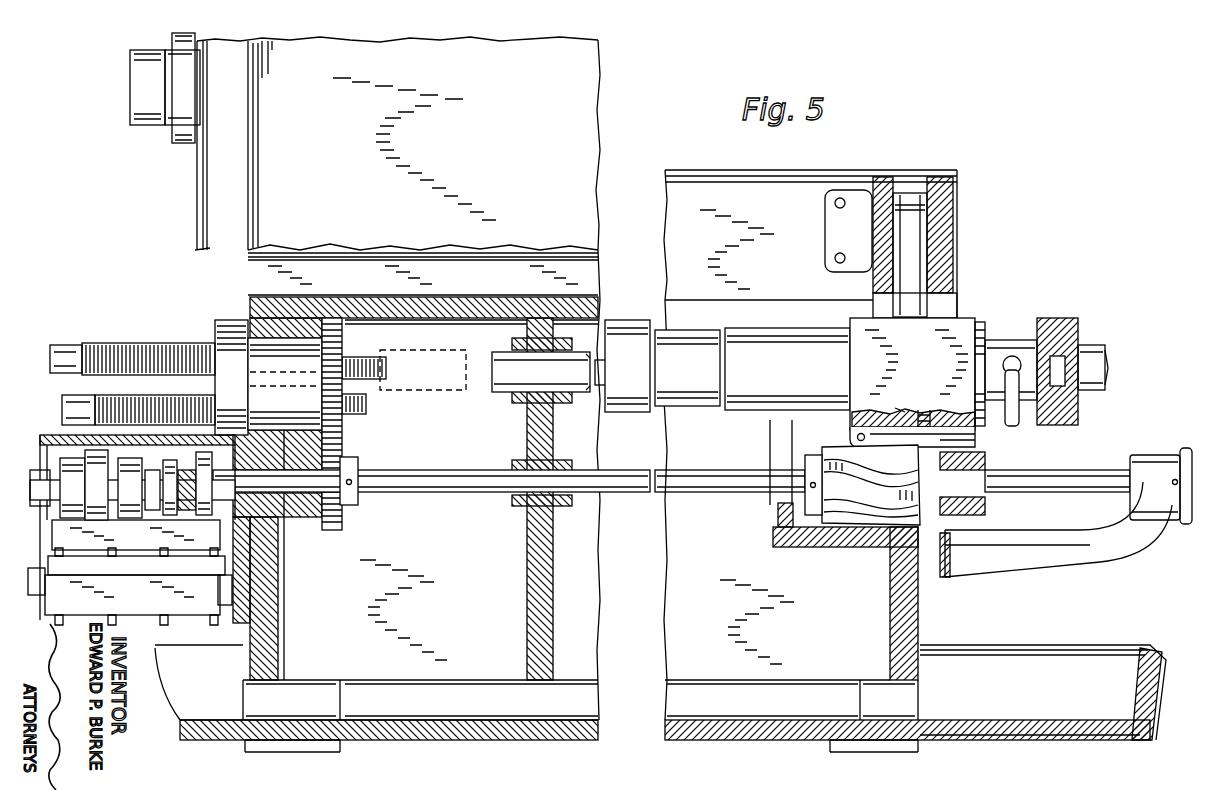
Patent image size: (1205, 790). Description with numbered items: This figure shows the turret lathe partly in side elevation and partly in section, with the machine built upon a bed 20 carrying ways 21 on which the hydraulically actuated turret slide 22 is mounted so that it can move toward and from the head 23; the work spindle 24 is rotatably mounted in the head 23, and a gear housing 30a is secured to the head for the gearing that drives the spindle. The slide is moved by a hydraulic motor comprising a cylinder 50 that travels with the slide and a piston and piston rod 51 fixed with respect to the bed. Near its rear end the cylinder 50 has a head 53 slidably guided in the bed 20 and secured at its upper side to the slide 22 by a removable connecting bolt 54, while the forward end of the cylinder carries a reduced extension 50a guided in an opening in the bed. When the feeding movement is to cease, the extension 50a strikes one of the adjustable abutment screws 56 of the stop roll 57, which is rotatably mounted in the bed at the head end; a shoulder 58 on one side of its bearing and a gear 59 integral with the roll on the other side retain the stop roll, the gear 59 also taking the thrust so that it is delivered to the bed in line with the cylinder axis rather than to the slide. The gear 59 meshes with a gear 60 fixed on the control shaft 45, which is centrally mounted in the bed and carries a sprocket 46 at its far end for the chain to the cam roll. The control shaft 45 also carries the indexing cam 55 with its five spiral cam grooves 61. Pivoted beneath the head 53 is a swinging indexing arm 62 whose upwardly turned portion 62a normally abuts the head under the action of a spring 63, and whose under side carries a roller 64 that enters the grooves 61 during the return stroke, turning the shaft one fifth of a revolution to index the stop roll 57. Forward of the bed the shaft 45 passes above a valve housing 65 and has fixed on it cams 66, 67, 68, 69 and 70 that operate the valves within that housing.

The bed 20 is at (920, 592).
The ways 21 is at (585, 272).
The turret slide 22 is at (686, 206).
The head 23 is at (585, 138).
The work spindle 24 is at (135, 80).
The gear housing 30a is at (206, 200).
The control shaft 45 is at (690, 492).
The sprocket 46 is at (1185, 460).
The cylinder 50 is at (727, 366).
The reduced extension 50a is at (500, 392).
The piston and piston rod 51 is at (1000, 356).
The head 53 is at (962, 328).
The connecting bolt 54 is at (925, 232).
The indexing cam 55 is at (870, 520).
The adjustable abutment screws 56 is at (162, 345).
The stop roll 57 is at (285, 338).
The shoulder 58 is at (232, 322).
The gear 59 is at (345, 338).
The gear 60 is at (343, 444).
The spiral cam grooves 61 is at (863, 485).
The indexing arm 62 is at (892, 426).
The upwardly turned portion 62a is at (848, 408).
The spring 63 is at (926, 420).
The roller 64 is at (968, 446).
The valve housing 65 is at (134, 560).
The cam 66 is at (72, 490).
The cam 67 is at (96, 485).
The cam 68 is at (130, 492).
The cam 69 is at (170, 470).
The cam 70 is at (208, 446).